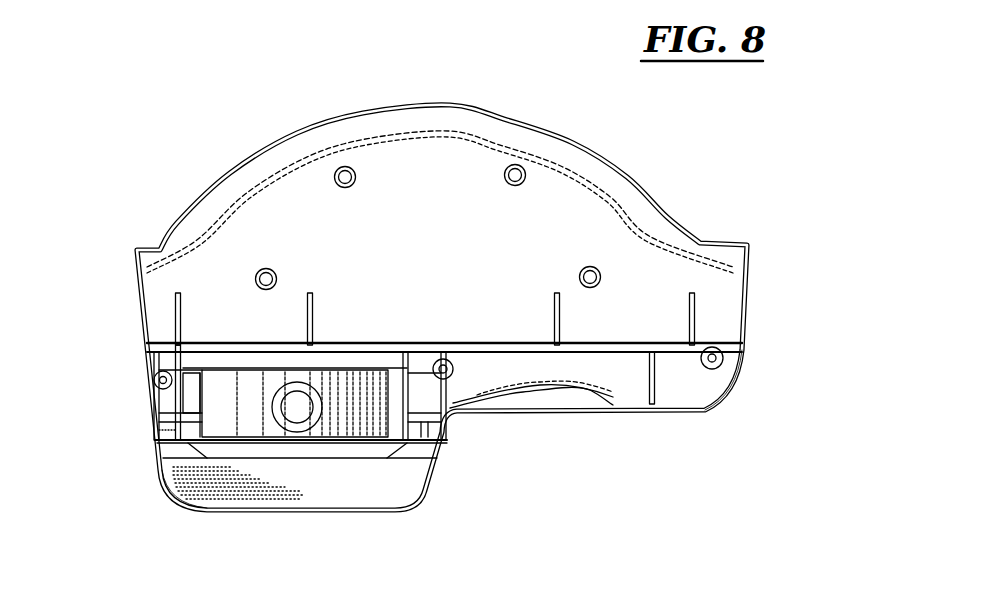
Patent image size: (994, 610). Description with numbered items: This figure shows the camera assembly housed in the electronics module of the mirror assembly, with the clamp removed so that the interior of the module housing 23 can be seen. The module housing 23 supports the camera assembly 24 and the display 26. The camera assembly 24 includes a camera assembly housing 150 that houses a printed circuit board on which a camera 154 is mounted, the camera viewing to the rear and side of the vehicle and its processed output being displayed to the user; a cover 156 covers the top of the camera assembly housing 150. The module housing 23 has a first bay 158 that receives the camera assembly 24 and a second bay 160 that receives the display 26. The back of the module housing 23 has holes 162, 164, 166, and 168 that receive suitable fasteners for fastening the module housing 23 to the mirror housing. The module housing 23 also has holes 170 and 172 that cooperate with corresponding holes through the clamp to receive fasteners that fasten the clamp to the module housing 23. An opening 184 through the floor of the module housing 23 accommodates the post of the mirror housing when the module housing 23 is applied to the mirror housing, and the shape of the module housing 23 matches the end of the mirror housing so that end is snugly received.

The module housing 23 is at (707, 412).
The camera assembly 24 is at (365, 343).
The display 26 is at (377, 478).
The camera assembly housing 150 is at (363, 402).
The camera 154 is at (297, 410).
The cover 156 is at (228, 362).
The first bay 158 is at (193, 400).
The second bay 160 is at (207, 512).
The hole 162 is at (591, 267).
The hole 164 is at (515, 187).
The hole 166 is at (352, 184).
The hole 168 is at (264, 270).
The hole 170 is at (723, 340).
The hole 172 is at (153, 374).
The opening 184 is at (580, 402).